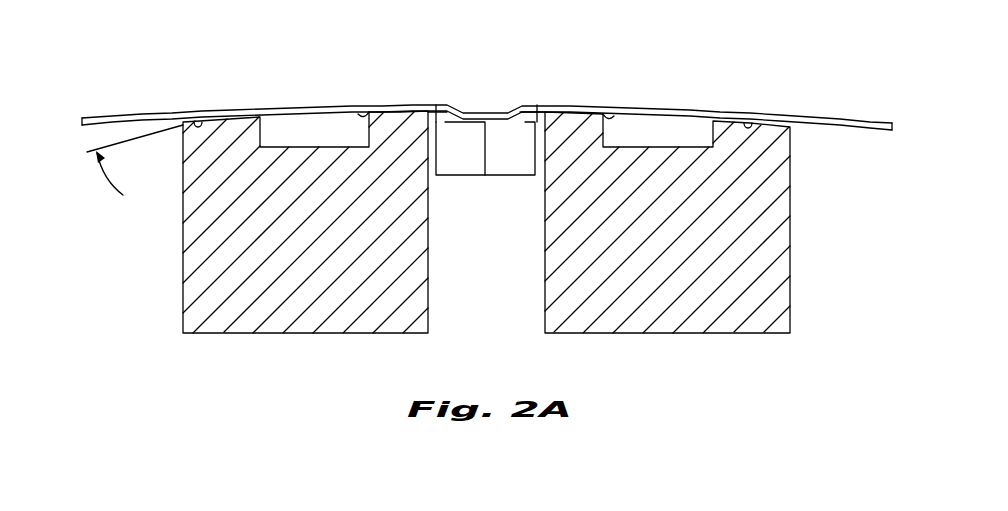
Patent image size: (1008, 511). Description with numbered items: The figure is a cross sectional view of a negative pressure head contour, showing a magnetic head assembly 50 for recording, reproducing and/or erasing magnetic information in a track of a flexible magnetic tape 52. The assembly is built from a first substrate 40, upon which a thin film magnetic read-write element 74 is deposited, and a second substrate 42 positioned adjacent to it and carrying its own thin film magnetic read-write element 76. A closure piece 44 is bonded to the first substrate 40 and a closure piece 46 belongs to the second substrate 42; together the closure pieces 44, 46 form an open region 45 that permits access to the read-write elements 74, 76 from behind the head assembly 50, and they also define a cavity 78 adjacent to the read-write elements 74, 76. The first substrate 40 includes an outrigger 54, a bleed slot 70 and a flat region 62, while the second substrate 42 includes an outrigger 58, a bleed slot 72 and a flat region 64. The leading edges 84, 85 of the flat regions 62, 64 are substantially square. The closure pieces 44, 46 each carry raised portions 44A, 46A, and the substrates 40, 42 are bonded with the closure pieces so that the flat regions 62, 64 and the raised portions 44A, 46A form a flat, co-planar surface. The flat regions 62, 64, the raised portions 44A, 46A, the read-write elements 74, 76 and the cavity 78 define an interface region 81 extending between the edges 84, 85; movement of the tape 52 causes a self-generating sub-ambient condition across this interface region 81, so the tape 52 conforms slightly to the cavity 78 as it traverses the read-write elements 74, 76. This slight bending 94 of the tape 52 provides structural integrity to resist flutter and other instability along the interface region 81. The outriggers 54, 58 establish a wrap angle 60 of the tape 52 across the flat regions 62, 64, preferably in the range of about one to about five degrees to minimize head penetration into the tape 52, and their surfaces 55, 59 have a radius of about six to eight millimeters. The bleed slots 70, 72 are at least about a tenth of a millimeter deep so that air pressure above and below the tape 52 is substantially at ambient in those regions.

The first substrate 40 is at (214, 325).
The second substrate 42 is at (721, 327).
The closure piece 44 is at (453, 168).
The raised portion 44A is at (443, 108).
The open region 45 is at (503, 290).
The closure piece 46 is at (511, 168).
The raised portion 46A is at (532, 108).
The magnetic head assembly 50 is at (180, 293).
The flexible magnetic tape 52 is at (143, 115).
The outrigger 54 is at (183, 147).
The surface 55 is at (195, 122).
The outrigger 58 is at (783, 143).
The surface 59 is at (748, 120).
The wrap angle 60 is at (92, 108).
The flat region 62 is at (400, 112).
The flat region 64 is at (577, 108).
The bleed slot 70 is at (306, 120).
The bleed slot 72 is at (665, 125).
The thin film magnetic read-write element 74 is at (431, 110).
The thin film magnetic read-write element 76 is at (540, 108).
The cavity 78 is at (508, 108).
The interface region 81 is at (495, 98).
The leading edge 84 is at (367, 115).
The leading edge 85 is at (605, 117).
The bending 94 is at (462, 111).